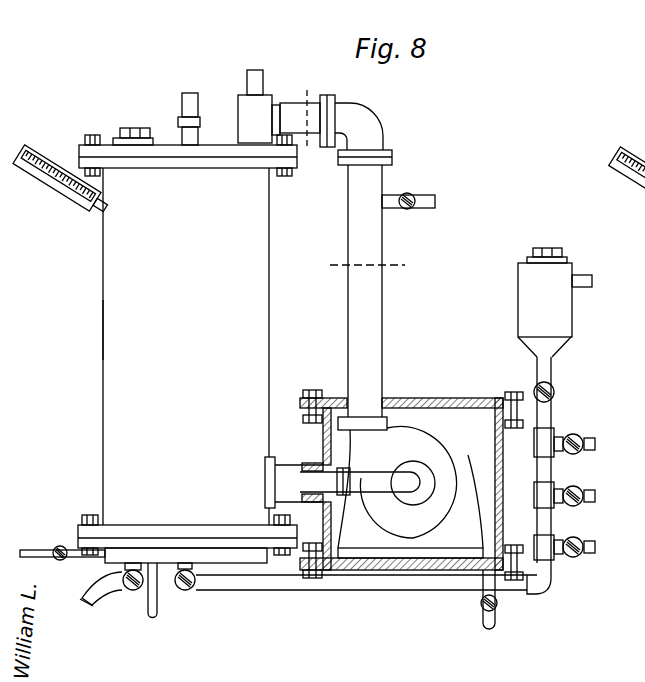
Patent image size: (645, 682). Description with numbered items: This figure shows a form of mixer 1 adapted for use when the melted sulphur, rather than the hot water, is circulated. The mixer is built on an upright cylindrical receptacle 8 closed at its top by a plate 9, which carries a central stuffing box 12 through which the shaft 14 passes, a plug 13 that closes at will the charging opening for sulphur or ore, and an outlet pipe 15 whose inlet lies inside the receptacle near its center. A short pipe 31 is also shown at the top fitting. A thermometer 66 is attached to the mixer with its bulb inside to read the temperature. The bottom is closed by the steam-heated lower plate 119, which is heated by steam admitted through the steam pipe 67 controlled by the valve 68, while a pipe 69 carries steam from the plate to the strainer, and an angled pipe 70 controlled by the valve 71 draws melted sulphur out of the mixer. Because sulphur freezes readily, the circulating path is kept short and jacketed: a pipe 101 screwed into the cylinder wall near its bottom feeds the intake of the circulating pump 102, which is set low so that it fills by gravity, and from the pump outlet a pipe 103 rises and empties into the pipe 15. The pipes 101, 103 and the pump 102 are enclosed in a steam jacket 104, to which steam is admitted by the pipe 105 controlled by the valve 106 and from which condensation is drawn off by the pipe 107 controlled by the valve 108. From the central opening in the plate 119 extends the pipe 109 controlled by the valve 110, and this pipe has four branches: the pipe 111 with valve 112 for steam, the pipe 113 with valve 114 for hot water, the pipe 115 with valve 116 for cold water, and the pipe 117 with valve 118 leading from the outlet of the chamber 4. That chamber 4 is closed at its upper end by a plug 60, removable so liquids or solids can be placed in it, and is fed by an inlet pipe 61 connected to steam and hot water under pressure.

The mixer 1 is at (197, 355).
The chamber 4 is at (550, 308).
The upright cylindrical receptacle 8 is at (103, 330).
The plate 9 is at (79, 150).
The stuffing box 12 is at (198, 126).
The plug 13 is at (132, 128).
The shaft 14 is at (193, 100).
The outlet pipe 15 is at (276, 130).
The pipe 31 is at (260, 72).
The plug 60 is at (546, 256).
The inlet pipe 61 is at (585, 276).
The thermometer 66 is at (52, 192).
The steam pipe 67 is at (30, 550).
The valve 68 is at (59, 561).
The pipe 69 is at (153, 609).
The pipe 70 is at (88, 602).
The valve 71 is at (132, 591).
The pipe 101 is at (367, 483).
The circulating pump 102 is at (446, 462).
The pipe 103 is at (383, 381).
The steam jacket 104 is at (372, 293).
The pipe 105 is at (430, 208).
The valve 106 is at (408, 195).
The pipe 107 is at (495, 624).
The valve 108 is at (481, 603).
The pipe 109 is at (265, 590).
The valve 110 is at (190, 590).
The pipe 111 is at (592, 554).
The valve 112 is at (578, 541).
The pipe 113 is at (596, 497).
The valve 114 is at (574, 493).
The pipe 115 is at (596, 441).
The valve 116 is at (578, 453).
The pipe 117 is at (553, 410).
The valve 118 is at (555, 392).
The lower plate 119 is at (78, 540).